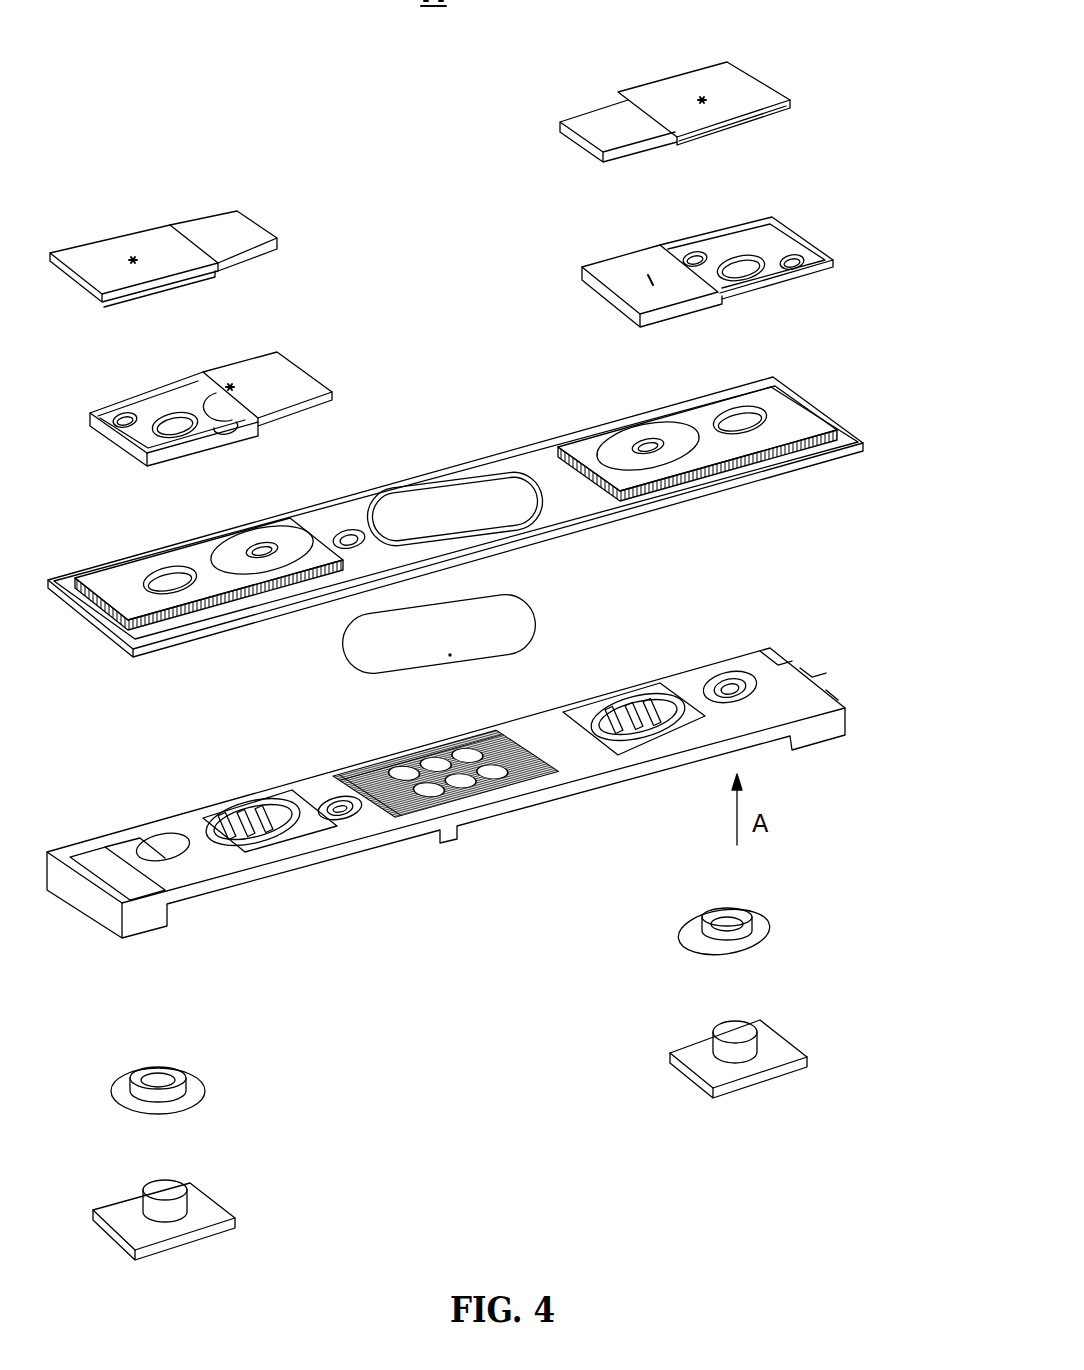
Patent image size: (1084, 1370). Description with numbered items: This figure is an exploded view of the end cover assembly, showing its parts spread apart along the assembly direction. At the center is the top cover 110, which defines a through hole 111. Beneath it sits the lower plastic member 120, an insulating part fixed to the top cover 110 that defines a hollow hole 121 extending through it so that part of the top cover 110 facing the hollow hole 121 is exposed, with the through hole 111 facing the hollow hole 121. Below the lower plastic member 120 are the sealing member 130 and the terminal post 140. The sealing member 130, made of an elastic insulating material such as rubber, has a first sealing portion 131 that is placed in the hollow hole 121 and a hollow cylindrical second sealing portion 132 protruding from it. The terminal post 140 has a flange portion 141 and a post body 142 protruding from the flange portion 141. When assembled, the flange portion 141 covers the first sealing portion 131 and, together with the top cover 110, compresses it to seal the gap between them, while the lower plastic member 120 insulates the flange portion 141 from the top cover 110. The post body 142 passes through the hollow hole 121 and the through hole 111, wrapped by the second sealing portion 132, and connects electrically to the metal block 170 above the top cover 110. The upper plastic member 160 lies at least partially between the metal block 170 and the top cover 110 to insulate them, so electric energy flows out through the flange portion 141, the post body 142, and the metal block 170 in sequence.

The top cover 110 is at (472, 496).
The through hole 111 is at (780, 408).
The lower plastic member 120 is at (446, 792).
The hollow hole 121 is at (702, 674).
The sealing member 130 is at (806, 904).
The first sealing portion 131 is at (770, 929).
The second sealing portion 132 is at (736, 908).
The terminal post 140 is at (815, 1086).
The flange portion 141 is at (770, 1048).
The post body 142 is at (804, 1093).
The upper plastic member 160 is at (772, 246).
The metal block 170 is at (720, 78).